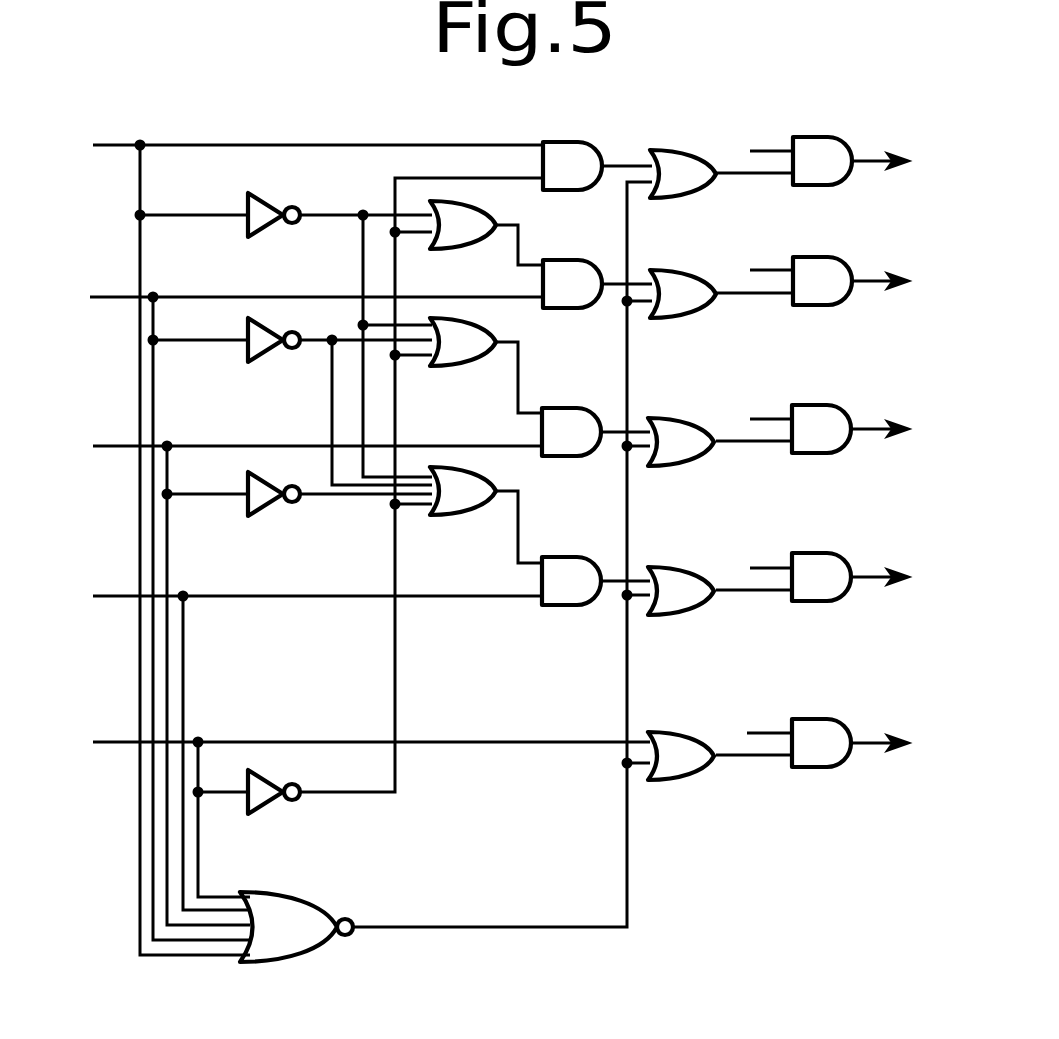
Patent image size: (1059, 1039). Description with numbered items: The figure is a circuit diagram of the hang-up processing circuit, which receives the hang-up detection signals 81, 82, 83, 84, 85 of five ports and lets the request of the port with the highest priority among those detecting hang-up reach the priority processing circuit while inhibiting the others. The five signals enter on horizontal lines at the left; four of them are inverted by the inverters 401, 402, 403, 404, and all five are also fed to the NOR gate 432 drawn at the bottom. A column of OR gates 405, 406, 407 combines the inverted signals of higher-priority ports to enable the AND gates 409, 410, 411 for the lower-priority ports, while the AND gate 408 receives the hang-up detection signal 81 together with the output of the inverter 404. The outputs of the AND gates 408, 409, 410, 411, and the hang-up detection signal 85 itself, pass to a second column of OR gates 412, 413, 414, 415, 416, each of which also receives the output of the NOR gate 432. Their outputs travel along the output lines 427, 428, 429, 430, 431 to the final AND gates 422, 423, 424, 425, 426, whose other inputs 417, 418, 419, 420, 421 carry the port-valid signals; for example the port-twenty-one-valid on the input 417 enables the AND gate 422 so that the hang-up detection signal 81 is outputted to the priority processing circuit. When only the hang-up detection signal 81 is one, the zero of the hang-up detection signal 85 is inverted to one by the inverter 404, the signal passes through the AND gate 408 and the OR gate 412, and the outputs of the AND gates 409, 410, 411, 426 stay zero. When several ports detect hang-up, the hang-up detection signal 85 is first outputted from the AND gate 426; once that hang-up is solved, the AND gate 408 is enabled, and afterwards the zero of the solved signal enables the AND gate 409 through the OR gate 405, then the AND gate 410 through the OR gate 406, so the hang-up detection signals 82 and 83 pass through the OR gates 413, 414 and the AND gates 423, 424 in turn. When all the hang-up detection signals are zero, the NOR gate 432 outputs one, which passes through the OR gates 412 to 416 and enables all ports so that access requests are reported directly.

The hang-up detection signal 81 is at (290, 539).
The hang-up detection signal 82 is at (290, 608).
The hang-up detection signal 83 is at (290, 676).
The hang-up detection signal 84 is at (290, 743).
The hang-up detection signal 85 is at (344, 811).
The inverter 401 is at (280, 205).
The inverter 402 is at (272, 326).
The inverter 403 is at (264, 512).
The inverter 404 is at (268, 808).
The OR gate 405 is at (459, 251).
The OR gate 406 is at (452, 368).
The OR gate 407 is at (488, 515).
The AND gate 408 is at (542, 141).
The AND gate 409 is at (597, 260).
The AND gate 410 is at (599, 407).
The AND gate 411 is at (598, 557).
The OR gate 412 is at (670, 150).
The OR gate 413 is at (694, 268).
The OR gate 414 is at (672, 418).
The OR gate 415 is at (682, 567).
The OR gate 416 is at (664, 732).
The input 417 is at (760, 150).
The input 418 is at (760, 270).
The input 419 is at (757, 419).
The input 420 is at (762, 568).
The input 421 is at (760, 733).
The AND gate 422 is at (852, 124).
The AND gate 423 is at (845, 248).
The AND gate 424 is at (842, 392).
The AND gate 425 is at (842, 562).
The AND gate 426 is at (845, 703).
The output line of OR gate 427 is at (748, 173).
The output line of OR gate 428 is at (748, 293).
The output line of OR gate 429 is at (742, 441).
The output line of OR gate 430 is at (742, 590).
The output line of OR gate 431 is at (742, 755).
The NOR gate 432 is at (334, 880).